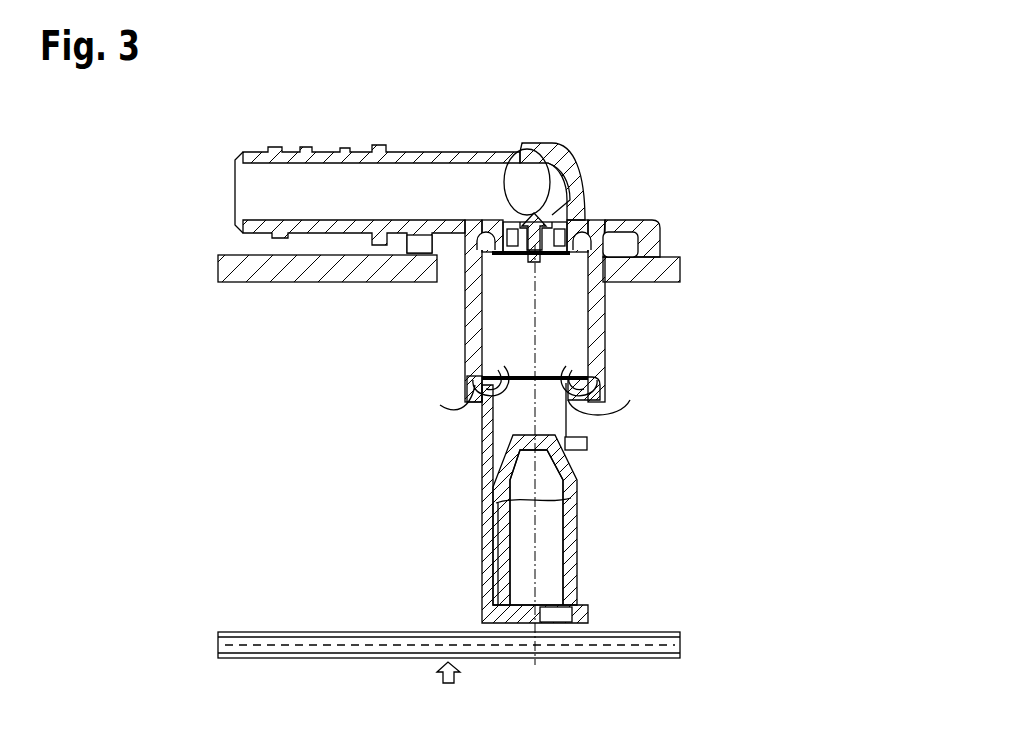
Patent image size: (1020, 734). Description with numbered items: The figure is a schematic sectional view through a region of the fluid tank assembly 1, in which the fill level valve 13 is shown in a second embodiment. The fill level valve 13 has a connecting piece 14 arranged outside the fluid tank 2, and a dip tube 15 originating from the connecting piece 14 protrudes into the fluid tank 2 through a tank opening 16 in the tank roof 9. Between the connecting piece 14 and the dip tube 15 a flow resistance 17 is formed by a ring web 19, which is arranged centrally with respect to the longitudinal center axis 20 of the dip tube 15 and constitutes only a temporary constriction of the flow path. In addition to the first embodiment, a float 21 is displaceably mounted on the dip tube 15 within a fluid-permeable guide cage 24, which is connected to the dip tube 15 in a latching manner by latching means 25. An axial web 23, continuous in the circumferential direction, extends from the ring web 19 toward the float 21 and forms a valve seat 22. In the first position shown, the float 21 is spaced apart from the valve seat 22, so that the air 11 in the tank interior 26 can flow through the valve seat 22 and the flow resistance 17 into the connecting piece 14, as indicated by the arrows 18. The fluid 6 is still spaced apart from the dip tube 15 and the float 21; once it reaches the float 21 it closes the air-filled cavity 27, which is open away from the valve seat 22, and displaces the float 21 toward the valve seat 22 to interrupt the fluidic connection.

The fluid tank assembly 1 is at (640, 118).
The fluid tank 2 is at (678, 243).
The fluid 6 is at (313, 648).
The tank roof 9 is at (262, 272).
The air 11 is at (318, 508).
The fill level valve 13 is at (597, 192).
The connecting piece 14 is at (283, 150).
The dip tube 15 is at (602, 350).
The tank opening 16 is at (463, 282).
The flow resistance 17 is at (553, 200).
The arrows 18 is at (548, 160).
The ring web 19 is at (505, 212).
The longitudinal center axis 20 is at (572, 500).
The float 21 is at (585, 545).
The valve seat 22 is at (553, 270).
The axial web 23 is at (551, 257).
The guide cage 24 is at (482, 513).
The latching means 25 is at (465, 377).
The tank interior 26 is at (268, 447).
The cavity 27 is at (547, 583).